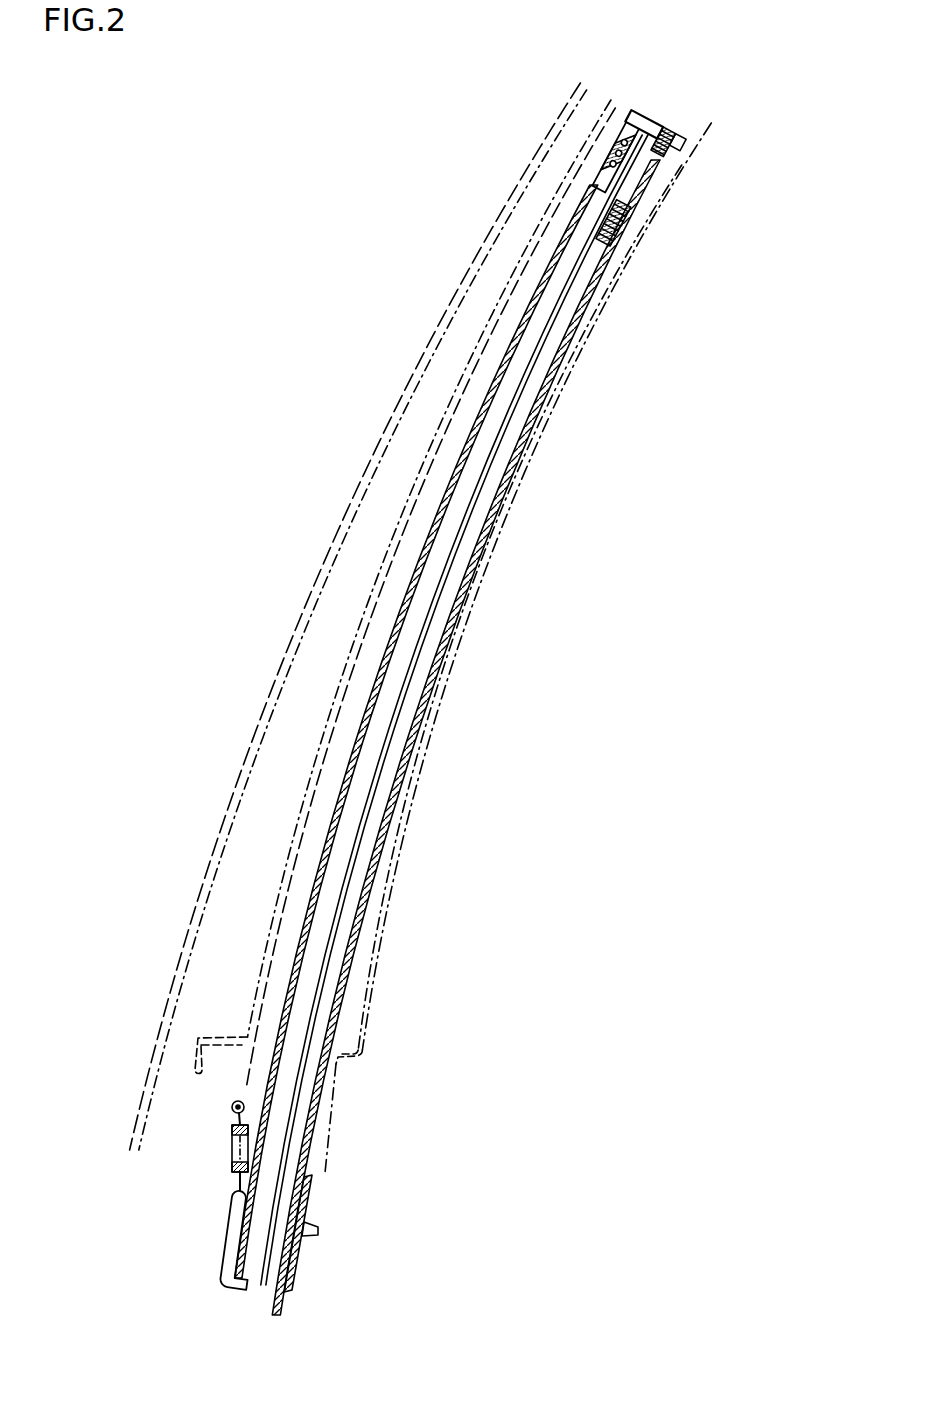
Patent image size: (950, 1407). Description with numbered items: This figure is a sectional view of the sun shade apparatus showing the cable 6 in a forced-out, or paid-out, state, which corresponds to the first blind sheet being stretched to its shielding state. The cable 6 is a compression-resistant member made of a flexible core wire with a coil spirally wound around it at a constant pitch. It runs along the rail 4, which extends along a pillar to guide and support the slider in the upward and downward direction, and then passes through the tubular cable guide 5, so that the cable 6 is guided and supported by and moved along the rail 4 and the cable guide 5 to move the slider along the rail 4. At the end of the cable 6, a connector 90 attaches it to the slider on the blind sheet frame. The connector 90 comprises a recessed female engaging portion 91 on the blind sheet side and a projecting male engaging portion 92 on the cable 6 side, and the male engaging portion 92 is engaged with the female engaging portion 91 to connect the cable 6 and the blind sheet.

The rail 4 is at (577, 325).
The cable guide 5 is at (597, 268).
The cable 6 is at (630, 213).
The connector 90 is at (717, 138).
The female engaging portion 91 is at (637, 130).
The male engaging portion 92 is at (647, 182).